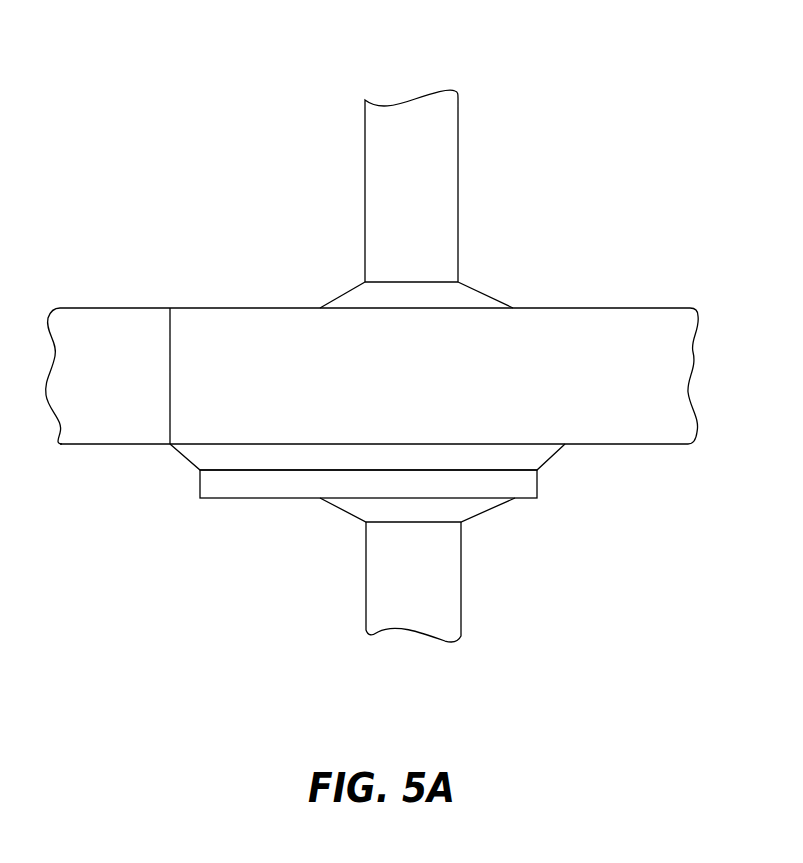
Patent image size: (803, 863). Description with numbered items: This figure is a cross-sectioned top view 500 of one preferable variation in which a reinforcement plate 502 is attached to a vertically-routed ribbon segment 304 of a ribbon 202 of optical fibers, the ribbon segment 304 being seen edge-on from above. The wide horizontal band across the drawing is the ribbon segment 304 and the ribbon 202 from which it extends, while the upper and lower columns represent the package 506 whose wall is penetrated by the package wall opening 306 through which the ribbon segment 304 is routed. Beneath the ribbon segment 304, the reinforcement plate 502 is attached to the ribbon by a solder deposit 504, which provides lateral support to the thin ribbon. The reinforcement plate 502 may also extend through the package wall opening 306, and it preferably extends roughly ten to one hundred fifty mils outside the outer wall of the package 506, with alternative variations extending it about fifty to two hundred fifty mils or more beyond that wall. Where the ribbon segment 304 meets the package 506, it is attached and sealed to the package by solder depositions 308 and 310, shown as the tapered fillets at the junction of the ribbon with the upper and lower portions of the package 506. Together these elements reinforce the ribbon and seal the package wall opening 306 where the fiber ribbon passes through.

The cross-sectioned top view 500 is at (82, 145).
The package 506 is at (365, 143).
The solder deposition 310 is at (332, 299).
The package wall opening 306 is at (460, 282).
The ribbon segment 304 is at (379, 376).
The ribbon of optical fibers 202 is at (108, 376).
The solder deposit 504 is at (367, 457).
The reinforcement plate 502 is at (368, 484).
The solder deposition 308 is at (340, 506).